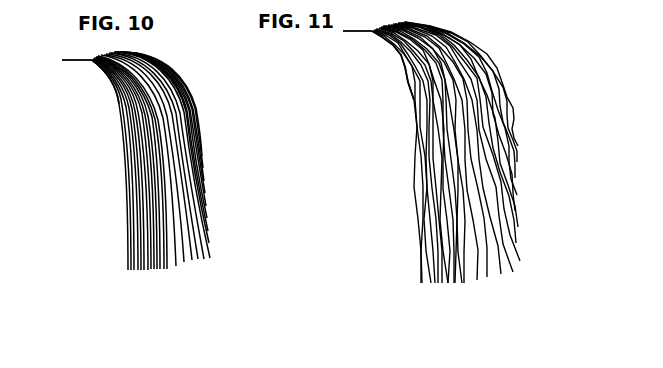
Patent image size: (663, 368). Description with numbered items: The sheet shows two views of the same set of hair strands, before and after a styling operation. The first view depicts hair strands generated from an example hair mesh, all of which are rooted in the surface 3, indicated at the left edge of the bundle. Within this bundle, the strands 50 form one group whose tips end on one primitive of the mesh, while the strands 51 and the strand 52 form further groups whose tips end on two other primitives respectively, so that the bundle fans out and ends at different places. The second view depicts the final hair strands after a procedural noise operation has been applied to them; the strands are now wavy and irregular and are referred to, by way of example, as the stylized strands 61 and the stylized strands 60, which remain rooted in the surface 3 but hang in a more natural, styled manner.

In FIG. 10, the surface 3 is at (109, 103).
In FIG. 11, the surface 3 is at (397, 68).
In FIG. 10, the strands 50 is at (197, 176).
In FIG. 10, the strands 51 is at (153, 282).
In FIG. 10, the strand 52 is at (195, 278).
In FIG. 11, the stylized strands 60 is at (450, 296).
In FIG. 11, the stylized strands 61 is at (501, 164).